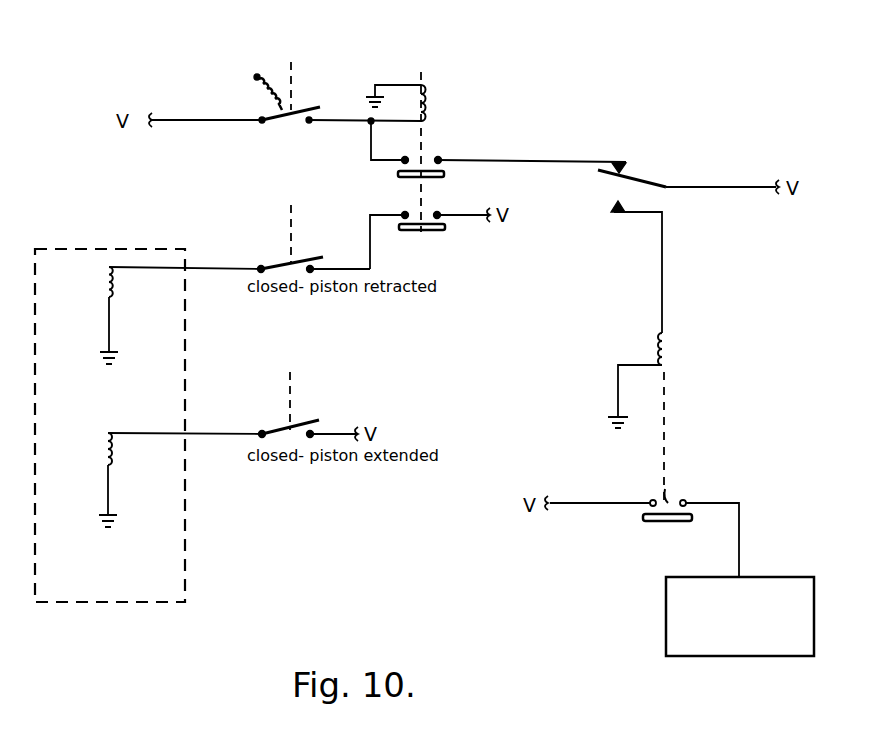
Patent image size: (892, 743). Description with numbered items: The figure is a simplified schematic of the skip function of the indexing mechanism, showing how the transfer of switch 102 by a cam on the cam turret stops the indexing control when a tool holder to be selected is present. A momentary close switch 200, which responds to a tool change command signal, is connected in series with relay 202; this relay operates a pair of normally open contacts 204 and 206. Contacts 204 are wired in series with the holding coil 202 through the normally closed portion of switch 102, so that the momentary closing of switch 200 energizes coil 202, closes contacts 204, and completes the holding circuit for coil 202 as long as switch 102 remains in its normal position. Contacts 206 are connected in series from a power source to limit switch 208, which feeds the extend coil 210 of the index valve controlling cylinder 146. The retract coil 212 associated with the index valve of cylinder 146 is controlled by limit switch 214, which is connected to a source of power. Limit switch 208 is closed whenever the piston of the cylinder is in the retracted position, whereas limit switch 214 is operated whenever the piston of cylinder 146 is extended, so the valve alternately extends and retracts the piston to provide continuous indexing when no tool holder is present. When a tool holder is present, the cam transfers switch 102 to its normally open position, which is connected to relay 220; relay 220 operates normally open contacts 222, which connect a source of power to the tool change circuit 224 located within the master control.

The switch 102 is at (637, 178).
The cylinder 146 is at (105, 243).
The momentary close switch 200 is at (302, 110).
The relay 202 is at (425, 105).
The contacts 204 is at (428, 164).
The contacts 206 is at (428, 219).
The limit switch 208 is at (280, 263).
The extend coil 210 is at (112, 296).
The retract coil 212 is at (112, 465).
The limit switch 214 is at (281, 428).
The relay 220 is at (668, 347).
The contacts 222 is at (663, 500).
The tool change circuit 224 is at (673, 649).